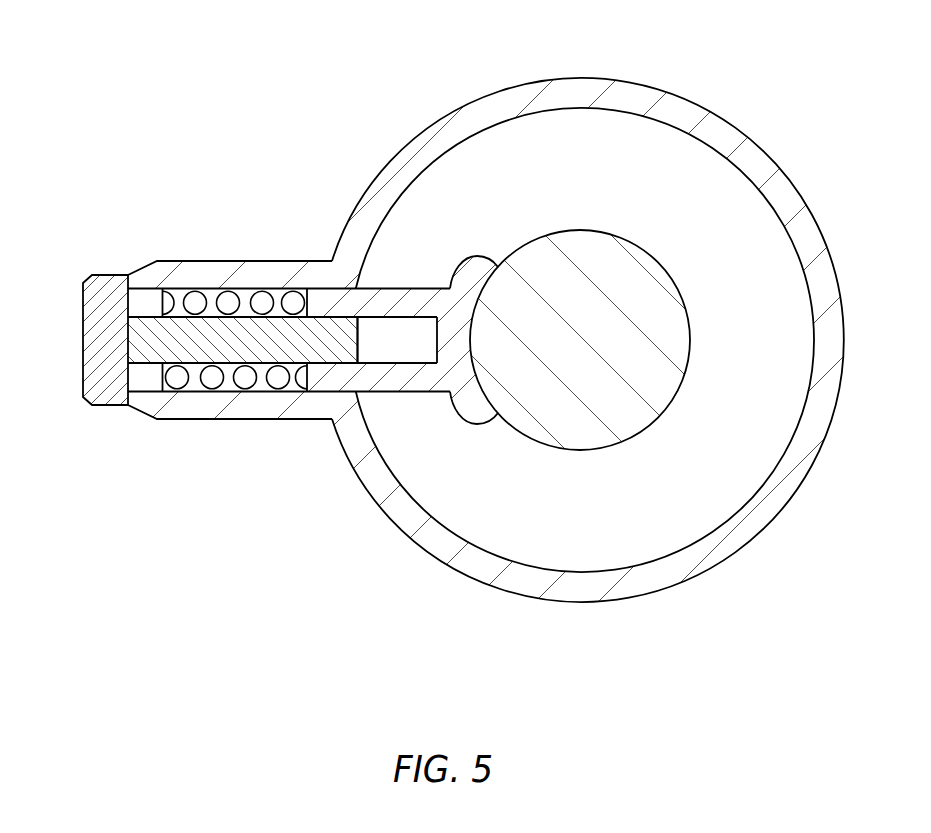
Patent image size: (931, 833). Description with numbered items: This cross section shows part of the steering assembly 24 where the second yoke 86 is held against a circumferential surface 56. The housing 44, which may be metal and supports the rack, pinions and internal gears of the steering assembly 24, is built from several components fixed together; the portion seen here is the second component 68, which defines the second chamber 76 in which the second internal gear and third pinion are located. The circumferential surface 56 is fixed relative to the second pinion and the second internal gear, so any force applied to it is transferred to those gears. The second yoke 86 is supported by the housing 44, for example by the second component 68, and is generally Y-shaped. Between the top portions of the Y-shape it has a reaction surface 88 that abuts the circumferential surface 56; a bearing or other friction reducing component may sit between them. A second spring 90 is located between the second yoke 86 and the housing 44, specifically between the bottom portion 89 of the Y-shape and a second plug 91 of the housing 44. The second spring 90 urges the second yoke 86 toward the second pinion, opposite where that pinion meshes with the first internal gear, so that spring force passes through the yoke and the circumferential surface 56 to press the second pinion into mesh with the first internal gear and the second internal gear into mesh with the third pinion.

The steering assembly 24 is at (260, 66).
The housing 44 is at (510, 88).
The second component 68 is at (682, 98).
The second chamber 76 is at (723, 202).
The circumferential surface 56 is at (585, 229).
The second yoke 86 is at (410, 378).
The reaction surface 88 is at (450, 392).
The bottom portion 89 is at (318, 378).
The second spring 90 is at (213, 378).
The second plug 91 is at (100, 322).